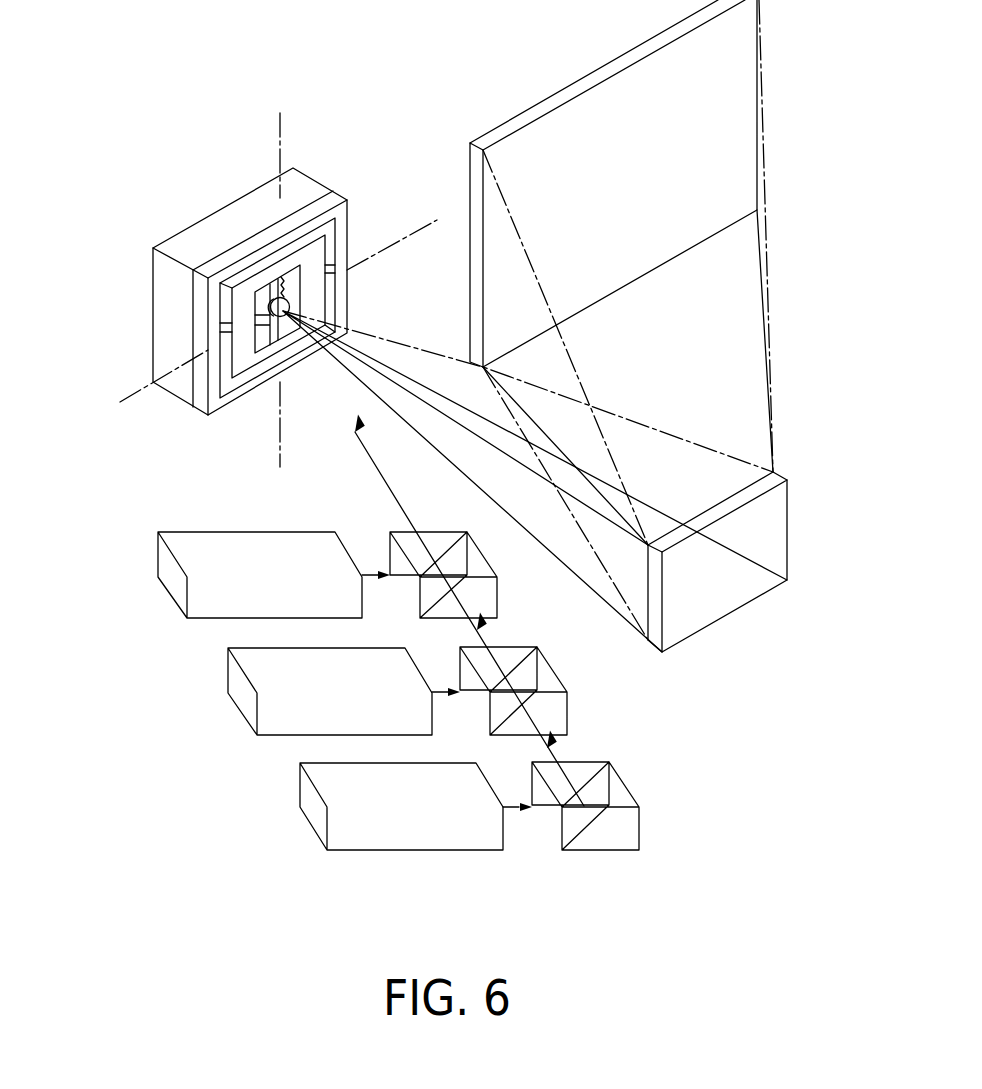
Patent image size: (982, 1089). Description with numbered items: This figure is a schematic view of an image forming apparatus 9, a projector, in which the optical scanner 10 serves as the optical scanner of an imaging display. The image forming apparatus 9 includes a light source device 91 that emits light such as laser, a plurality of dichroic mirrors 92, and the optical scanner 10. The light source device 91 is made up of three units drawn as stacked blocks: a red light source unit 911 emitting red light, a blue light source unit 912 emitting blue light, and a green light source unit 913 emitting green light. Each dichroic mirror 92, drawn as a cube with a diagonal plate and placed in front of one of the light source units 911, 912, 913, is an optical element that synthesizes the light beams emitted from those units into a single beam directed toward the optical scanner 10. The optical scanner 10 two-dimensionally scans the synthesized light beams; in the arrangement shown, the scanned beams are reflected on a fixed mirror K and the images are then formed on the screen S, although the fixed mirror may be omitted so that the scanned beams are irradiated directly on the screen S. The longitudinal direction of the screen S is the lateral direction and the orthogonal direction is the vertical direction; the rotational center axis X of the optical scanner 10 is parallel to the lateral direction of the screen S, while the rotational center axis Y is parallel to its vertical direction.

The image forming apparatus 9 is at (143, 165).
The optical scanner 10 is at (149, 304).
The light source device 91 is at (45, 622).
The red light source unit 911 is at (312, 805).
The blue light source unit 912 is at (238, 685).
The green light source unit 913 is at (175, 582).
The dichroic mirror 92 is at (493, 595).
The screen S is at (727, 140).
The fixed mirror K is at (773, 543).
The rotational center axis X is at (145, 390).
The rotational center axis Y is at (276, 150).